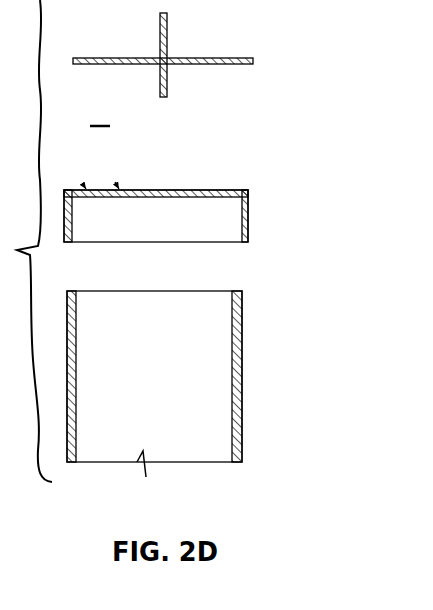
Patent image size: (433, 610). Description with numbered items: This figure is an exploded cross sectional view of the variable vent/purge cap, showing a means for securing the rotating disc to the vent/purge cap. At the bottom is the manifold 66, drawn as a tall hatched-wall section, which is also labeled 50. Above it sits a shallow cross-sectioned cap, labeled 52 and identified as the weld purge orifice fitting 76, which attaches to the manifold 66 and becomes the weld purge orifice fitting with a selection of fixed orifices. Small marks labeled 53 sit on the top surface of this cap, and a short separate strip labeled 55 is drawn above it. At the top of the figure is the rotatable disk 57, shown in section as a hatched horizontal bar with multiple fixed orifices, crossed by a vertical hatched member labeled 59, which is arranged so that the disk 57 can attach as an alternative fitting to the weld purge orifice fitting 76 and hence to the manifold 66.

The housing / enclosure wall 50 is at (179, 384).
The manifold 66 is at (238, 358).
The cover / cap 52 is at (194, 201).
The weld purge orifice fitting 76 is at (156, 201).
The adhesive / cover top 53 is at (100, 190).
The spacer strip 55 is at (108, 127).
The rotatable disk 57 is at (213, 60).
The vertical divider 59 is at (141, 71).